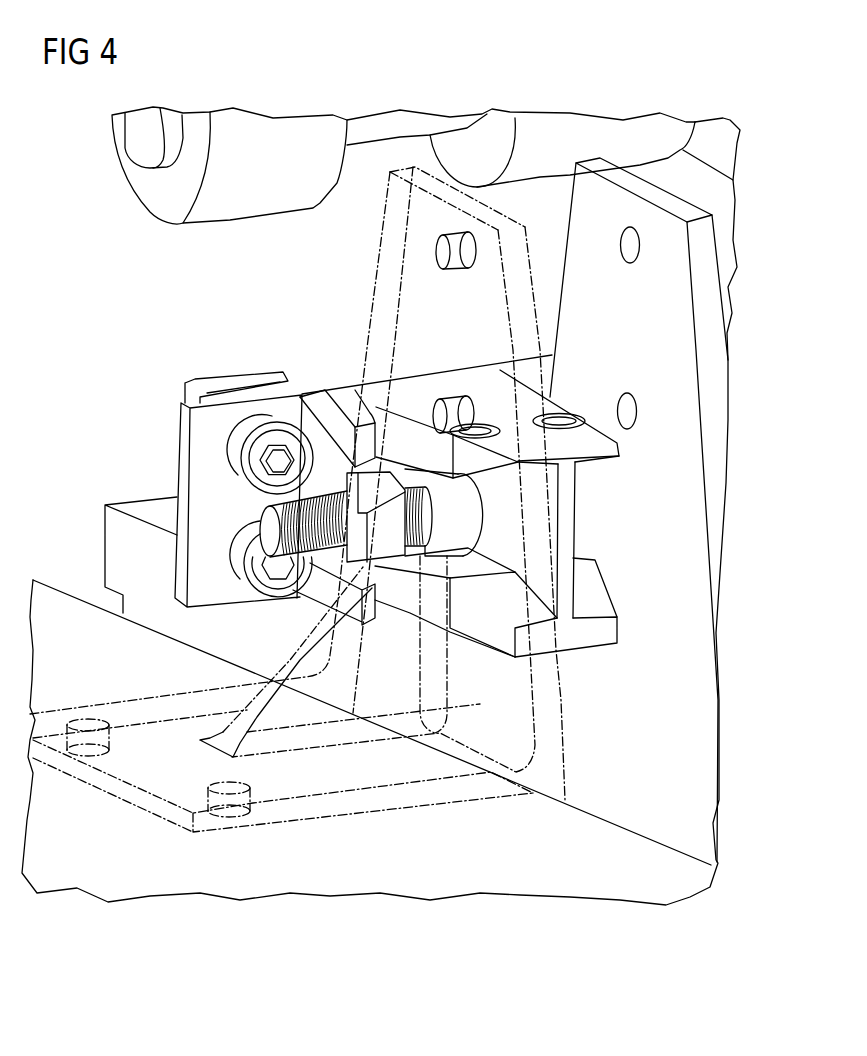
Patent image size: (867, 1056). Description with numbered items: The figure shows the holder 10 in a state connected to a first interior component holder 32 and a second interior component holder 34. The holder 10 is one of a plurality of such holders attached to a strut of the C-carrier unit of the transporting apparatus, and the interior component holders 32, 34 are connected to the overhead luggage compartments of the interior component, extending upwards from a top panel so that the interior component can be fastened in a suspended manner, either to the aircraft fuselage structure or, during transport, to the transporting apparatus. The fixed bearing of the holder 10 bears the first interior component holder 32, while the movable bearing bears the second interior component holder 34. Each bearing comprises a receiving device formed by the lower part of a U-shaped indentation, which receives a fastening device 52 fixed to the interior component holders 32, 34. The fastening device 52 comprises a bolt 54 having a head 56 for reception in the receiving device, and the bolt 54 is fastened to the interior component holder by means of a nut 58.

The holder 10 is at (169, 473).
The first interior component holder 32 is at (333, 785).
The second interior component holder 34 is at (683, 375).
The fastening device 52 is at (338, 581).
The bolt 54 is at (267, 531).
The head 56 is at (466, 518).
The nut 58 is at (377, 547).